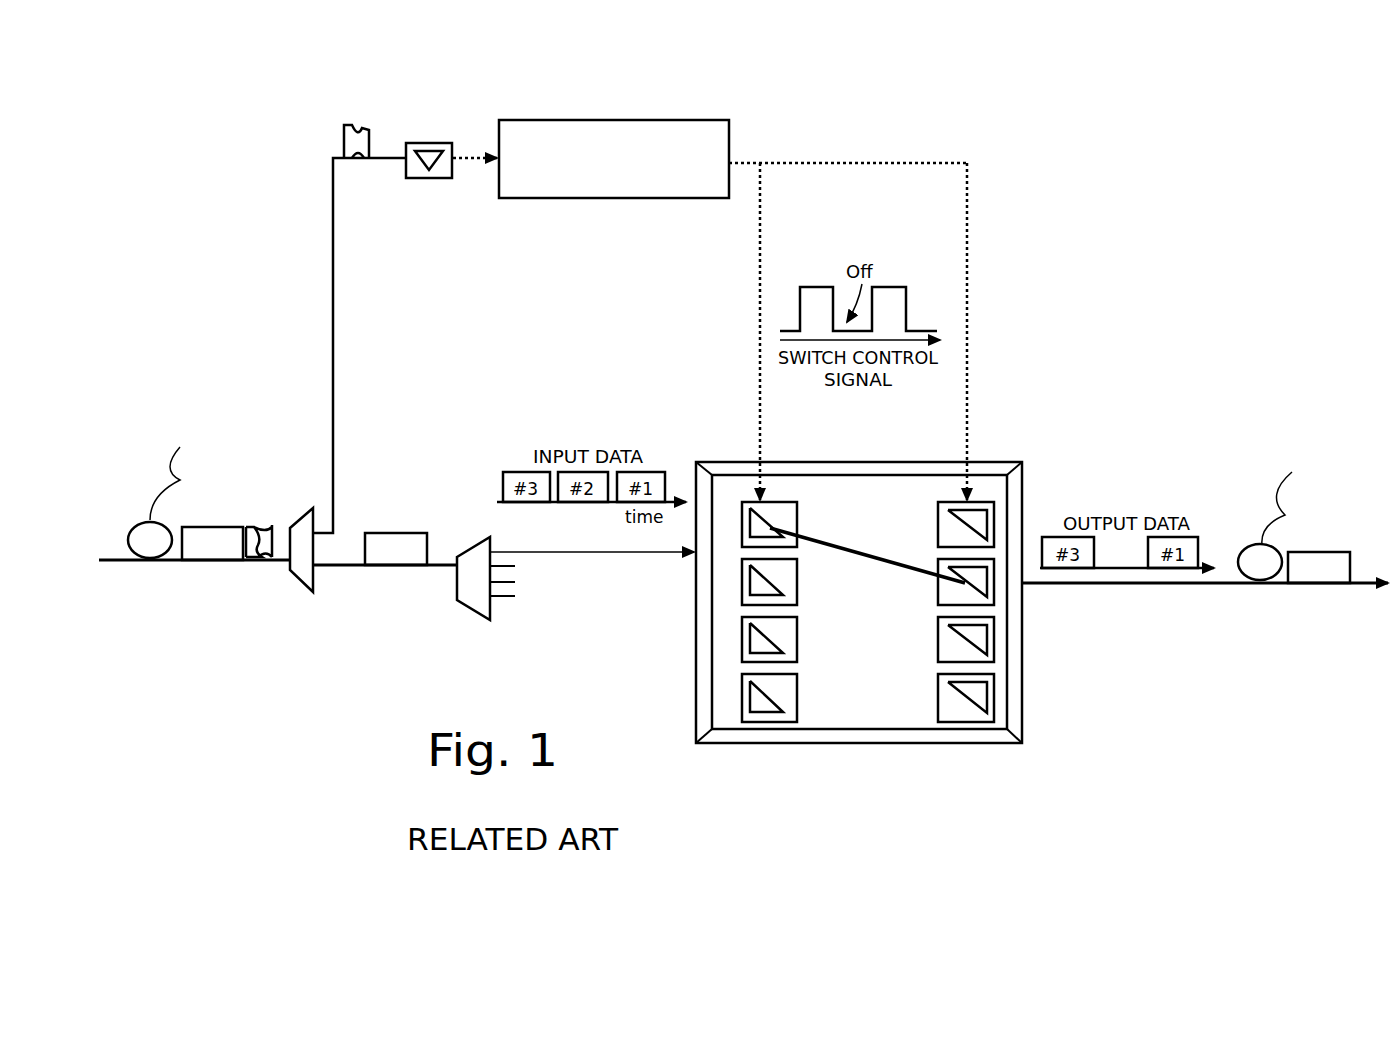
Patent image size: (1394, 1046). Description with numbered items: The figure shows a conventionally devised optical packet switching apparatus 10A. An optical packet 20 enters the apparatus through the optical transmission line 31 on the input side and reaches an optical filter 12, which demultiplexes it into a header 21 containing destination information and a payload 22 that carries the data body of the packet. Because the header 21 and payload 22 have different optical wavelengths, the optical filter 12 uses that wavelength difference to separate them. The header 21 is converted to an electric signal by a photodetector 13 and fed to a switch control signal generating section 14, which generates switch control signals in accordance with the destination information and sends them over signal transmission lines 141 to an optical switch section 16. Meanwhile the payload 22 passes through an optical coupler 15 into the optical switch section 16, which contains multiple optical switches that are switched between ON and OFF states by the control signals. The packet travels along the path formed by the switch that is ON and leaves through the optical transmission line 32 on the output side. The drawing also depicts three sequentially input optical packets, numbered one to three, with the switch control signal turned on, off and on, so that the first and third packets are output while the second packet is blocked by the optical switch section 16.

The optical packet switching apparatus 10A is at (1048, 172).
The optical filter 12 is at (305, 515).
The photodetector 13 is at (416, 140).
The switch control signal generating section 14 is at (533, 118).
The signal transmission lines 141 is at (765, 210).
The optical coupler 15 is at (480, 540).
The optical switch section 16 is at (825, 462).
The optical packet 20 is at (230, 527).
The header 21 is at (361, 120).
The payload 22 is at (413, 530).
The optical transmission line on the input side 31 is at (118, 556).
The optical transmission line on the output side 32 is at (1366, 582).